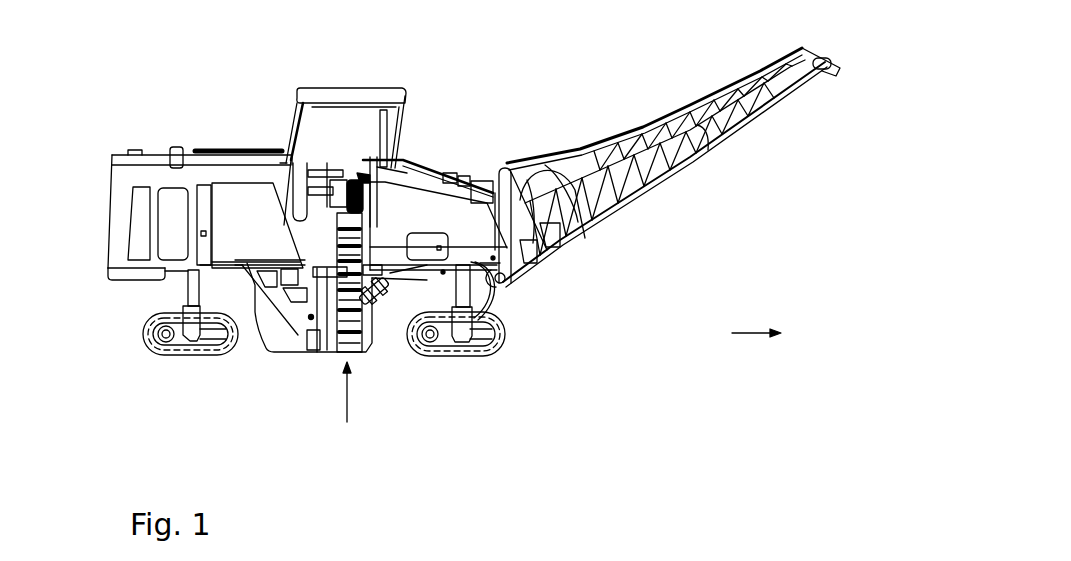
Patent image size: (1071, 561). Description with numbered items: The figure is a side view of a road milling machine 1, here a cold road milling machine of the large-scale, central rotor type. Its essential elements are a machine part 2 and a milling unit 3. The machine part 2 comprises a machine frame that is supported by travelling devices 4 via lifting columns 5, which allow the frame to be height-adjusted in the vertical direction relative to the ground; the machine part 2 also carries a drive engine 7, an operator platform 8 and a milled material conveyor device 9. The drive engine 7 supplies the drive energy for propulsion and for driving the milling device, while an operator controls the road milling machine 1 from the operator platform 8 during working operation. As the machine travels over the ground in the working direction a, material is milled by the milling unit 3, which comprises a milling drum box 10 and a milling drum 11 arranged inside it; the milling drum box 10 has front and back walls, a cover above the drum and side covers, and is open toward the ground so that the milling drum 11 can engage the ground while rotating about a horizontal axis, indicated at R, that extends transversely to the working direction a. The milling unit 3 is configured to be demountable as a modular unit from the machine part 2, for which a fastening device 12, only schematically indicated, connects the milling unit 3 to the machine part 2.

The road milling machine 1 is at (478, 107).
The machine part 2 is at (143, 210).
The milling unit 3 is at (332, 333).
The travelling devices 4 is at (163, 353).
The lifting columns 5 is at (193, 283).
The drive engine 7 is at (222, 225).
The operator platform 8 is at (358, 143).
The milled material conveyor device 9 is at (607, 195).
The milling drum box 10 is at (273, 342).
The milling drum 11 is at (349, 401).
The fastening device 12 is at (355, 286).
The rotation axis of milling drum R is at (311, 318).
The working direction a is at (767, 340).